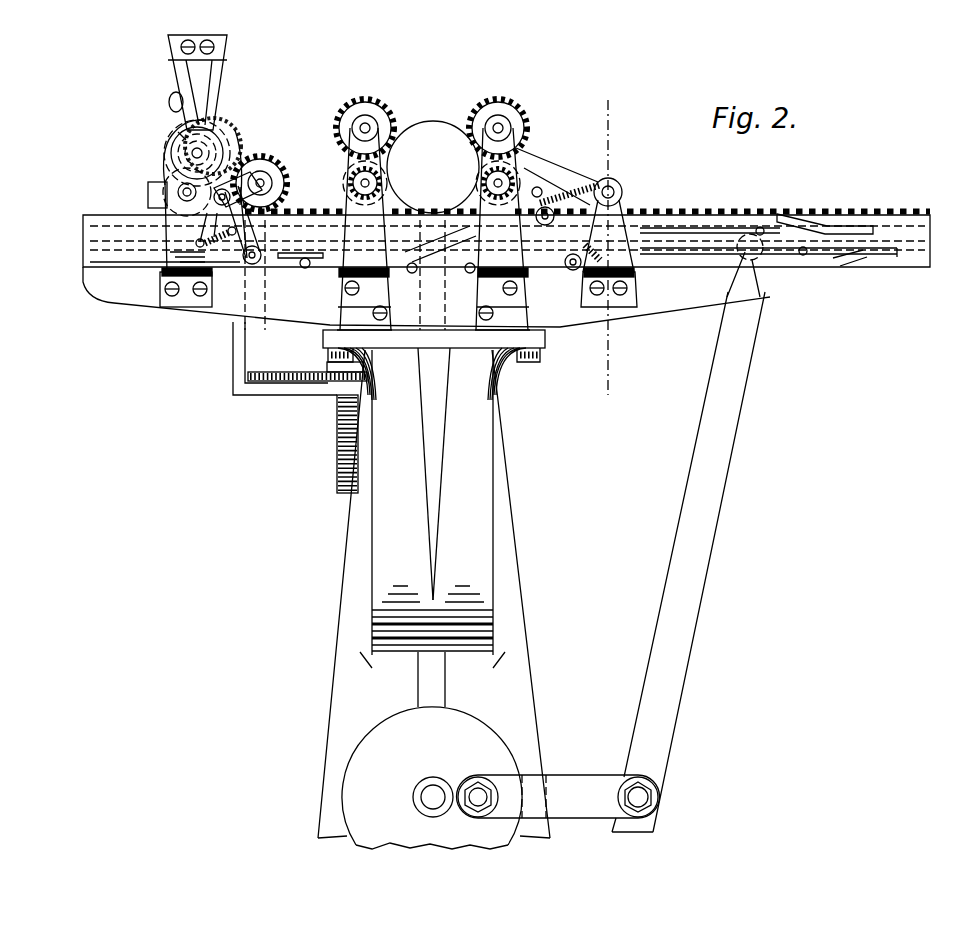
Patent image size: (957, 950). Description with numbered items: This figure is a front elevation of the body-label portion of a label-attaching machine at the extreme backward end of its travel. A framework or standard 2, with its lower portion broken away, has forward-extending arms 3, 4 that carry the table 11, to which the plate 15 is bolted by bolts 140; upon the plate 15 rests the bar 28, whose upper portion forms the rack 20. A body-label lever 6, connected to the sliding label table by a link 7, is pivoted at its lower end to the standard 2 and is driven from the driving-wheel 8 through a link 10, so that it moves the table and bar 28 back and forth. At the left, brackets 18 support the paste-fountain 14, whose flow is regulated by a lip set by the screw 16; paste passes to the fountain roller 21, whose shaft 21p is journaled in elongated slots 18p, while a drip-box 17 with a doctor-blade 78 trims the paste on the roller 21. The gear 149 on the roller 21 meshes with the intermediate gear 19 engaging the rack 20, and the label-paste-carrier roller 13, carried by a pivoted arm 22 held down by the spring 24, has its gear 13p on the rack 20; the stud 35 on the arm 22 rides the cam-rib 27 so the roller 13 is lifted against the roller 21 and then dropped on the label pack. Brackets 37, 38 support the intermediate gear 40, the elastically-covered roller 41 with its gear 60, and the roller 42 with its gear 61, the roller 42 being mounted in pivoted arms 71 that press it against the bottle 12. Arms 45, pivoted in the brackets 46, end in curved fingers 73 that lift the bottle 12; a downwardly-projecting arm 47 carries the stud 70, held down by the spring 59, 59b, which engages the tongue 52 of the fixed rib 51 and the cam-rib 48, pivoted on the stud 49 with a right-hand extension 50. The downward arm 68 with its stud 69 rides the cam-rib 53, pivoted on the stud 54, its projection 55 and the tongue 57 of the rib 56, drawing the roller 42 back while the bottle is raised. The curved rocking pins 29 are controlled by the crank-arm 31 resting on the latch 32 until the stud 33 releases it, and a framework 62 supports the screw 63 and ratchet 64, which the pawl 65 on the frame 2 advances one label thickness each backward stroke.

The standard 2 is at (524, 708).
The arm 3 is at (458, 475).
The arm 4 is at (407, 475).
The body-label lever 6 is at (688, 562).
The link 7 is at (746, 262).
The driving-wheel 8 is at (395, 786).
The link 10 is at (557, 796).
The table 11 is at (534, 340).
The bottle 12 is at (431, 127).
The label-paste-carrier roller 13 is at (258, 176).
The gear 13p is at (256, 165).
The paste-fountain 14 is at (218, 58).
The plate 15 is at (123, 290).
The screw 16 is at (169, 102).
The drip-box 17 is at (148, 194).
The bracket 18 is at (191, 293).
The elongated slot 18p is at (178, 134).
The intermediate gear 19 is at (161, 174).
The rack 20 is at (890, 211).
The fountain roller 21 is at (219, 145).
The shaft 21p is at (201, 148).
The pivoted arm 22 is at (305, 258).
The spring 24 is at (200, 246).
The cam-rib 27 is at (248, 266).
The bar 28 is at (90, 262).
The curved rocking pins 29 is at (608, 218).
The crank-arm 31 is at (632, 228).
The latch 32 is at (672, 240).
The stud 33 is at (345, 211).
The stud 35 is at (285, 249).
The bracket 37 is at (357, 295).
The bracket 38 is at (514, 362).
The intermediate driving-gear 40 is at (557, 176).
The elastically-covered roller 41 is at (368, 99).
The pivoted roller 42 is at (523, 117).
The arm 45 is at (556, 178).
The bracket 46 is at (618, 305).
The downwardly-projecting arm 47 is at (614, 181).
The cam-rib 48 is at (790, 258).
The stud 49 is at (811, 254).
The rib extension 50 is at (843, 260).
The fixed rib 51 is at (897, 256).
The tongue 52 is at (857, 263).
The cam-rib 53 is at (742, 232).
The stud 54 is at (763, 230).
The projection 55 is at (783, 233).
The rib 56 is at (848, 228).
The tongue 57 is at (817, 224).
The spring 59 is at (351, 196).
The spring 59b is at (640, 268).
The gear 60 is at (349, 118).
The gear 61 is at (494, 100).
The framework 62 is at (247, 393).
The screw 63 is at (336, 447).
The ratchet 64 is at (324, 377).
The pawl 65 is at (286, 383).
The downward-extending arm 68 is at (540, 190).
The stud 69 is at (590, 180).
The stud 70 is at (585, 296).
The pivoted arm 71 is at (546, 207).
The curved finger 73 is at (398, 203).
The doctor-blade 78 is at (168, 163).
The bolt 140 is at (540, 358).
The gear 149 is at (205, 150).